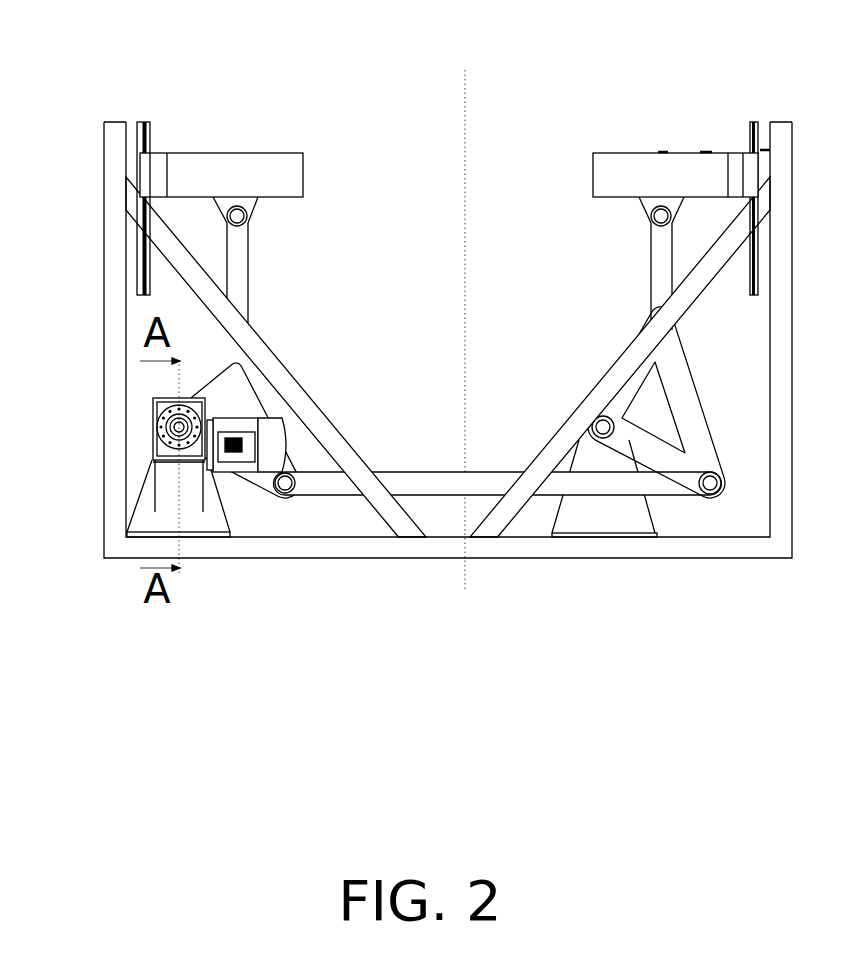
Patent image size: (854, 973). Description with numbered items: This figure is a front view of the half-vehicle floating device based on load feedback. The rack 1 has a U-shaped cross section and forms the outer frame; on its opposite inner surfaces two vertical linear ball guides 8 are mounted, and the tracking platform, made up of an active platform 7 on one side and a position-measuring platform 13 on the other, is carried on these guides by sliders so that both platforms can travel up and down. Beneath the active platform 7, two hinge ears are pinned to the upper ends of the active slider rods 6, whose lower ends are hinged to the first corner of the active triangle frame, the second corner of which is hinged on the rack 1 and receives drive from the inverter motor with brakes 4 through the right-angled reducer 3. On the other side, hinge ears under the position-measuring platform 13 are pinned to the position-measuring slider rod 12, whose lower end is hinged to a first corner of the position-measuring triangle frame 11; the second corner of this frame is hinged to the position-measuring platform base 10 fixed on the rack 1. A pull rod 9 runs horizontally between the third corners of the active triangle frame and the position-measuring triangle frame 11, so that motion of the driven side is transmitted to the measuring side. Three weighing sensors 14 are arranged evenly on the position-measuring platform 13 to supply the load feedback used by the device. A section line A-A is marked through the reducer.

The rack 1 is at (115, 150).
The right-angled reducer 3 is at (190, 417).
The inverter motor with brakes 4 is at (267, 428).
The active slider rod 6 is at (228, 240).
The active platform 7 is at (193, 177).
The linear ball guide 8 is at (135, 150).
The pull rod 9 is at (475, 483).
The position-measuring platform base 10 is at (587, 455).
The position-measuring triangle frame 11 is at (620, 398).
The position-measuring slider rod 12 is at (653, 243).
The position-measuring platform 13 is at (683, 167).
The weighing sensor 14 is at (707, 153).